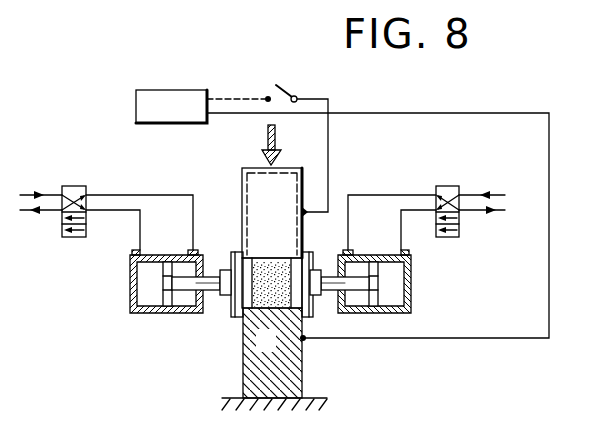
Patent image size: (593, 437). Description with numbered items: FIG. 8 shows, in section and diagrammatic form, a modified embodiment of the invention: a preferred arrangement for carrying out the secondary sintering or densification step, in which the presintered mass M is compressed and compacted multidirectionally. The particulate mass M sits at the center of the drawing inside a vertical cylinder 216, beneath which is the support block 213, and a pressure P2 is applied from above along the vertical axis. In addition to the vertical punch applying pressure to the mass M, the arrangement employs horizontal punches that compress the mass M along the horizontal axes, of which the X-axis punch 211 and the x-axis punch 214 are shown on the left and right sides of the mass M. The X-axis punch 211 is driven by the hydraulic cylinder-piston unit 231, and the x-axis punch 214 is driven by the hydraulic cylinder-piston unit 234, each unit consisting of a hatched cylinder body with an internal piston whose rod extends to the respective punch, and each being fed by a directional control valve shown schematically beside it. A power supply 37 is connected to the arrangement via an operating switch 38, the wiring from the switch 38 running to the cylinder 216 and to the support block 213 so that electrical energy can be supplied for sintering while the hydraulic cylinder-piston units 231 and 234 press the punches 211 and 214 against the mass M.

The power supply 37 is at (159, 95).
The operating switch 38 is at (273, 84).
The pressure P2 is at (265, 135).
The cylinder 216 is at (250, 178).
The X-axis punch 211 is at (237, 305).
The x-axis punch 214 is at (308, 305).
The hydraulic cylinder-piston unit 231 is at (120, 295).
The hydraulic cylinder-piston unit 234 is at (470, 287).
The support block 213 is at (292, 359).
The particulate mass M is at (296, 372).